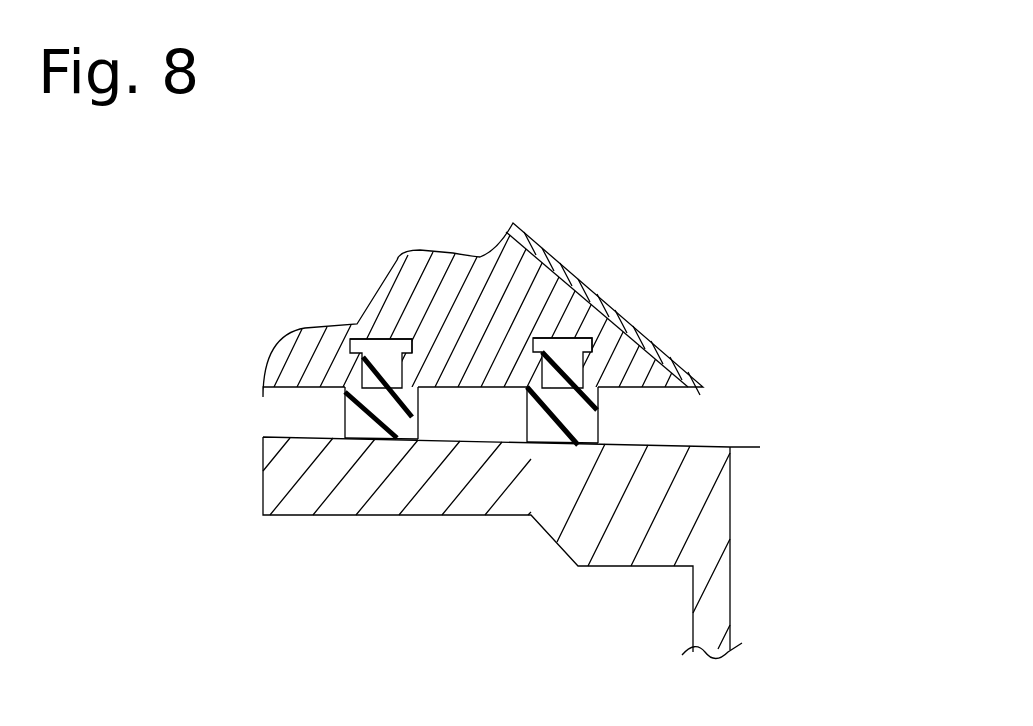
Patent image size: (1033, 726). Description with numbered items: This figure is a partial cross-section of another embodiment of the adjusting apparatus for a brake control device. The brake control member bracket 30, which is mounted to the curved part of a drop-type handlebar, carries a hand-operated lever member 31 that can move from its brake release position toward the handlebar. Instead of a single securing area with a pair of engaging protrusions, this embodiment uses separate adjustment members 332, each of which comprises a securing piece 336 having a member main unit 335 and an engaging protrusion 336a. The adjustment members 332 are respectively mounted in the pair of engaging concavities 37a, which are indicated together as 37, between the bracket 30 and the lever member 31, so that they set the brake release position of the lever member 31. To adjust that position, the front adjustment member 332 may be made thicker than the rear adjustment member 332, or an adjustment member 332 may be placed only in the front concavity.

The brake control member bracket 30 is at (570, 220).
The lever member 31 is at (790, 413).
The engaging portion 37 is at (477, 150).
The engaging concavities 37a is at (535, 339).
The adjustment member 332 is at (363, 420).
The member main unit 335 is at (572, 421).
The securing piece 336 is at (368, 339).
The engaging protrusion 336a is at (352, 348).